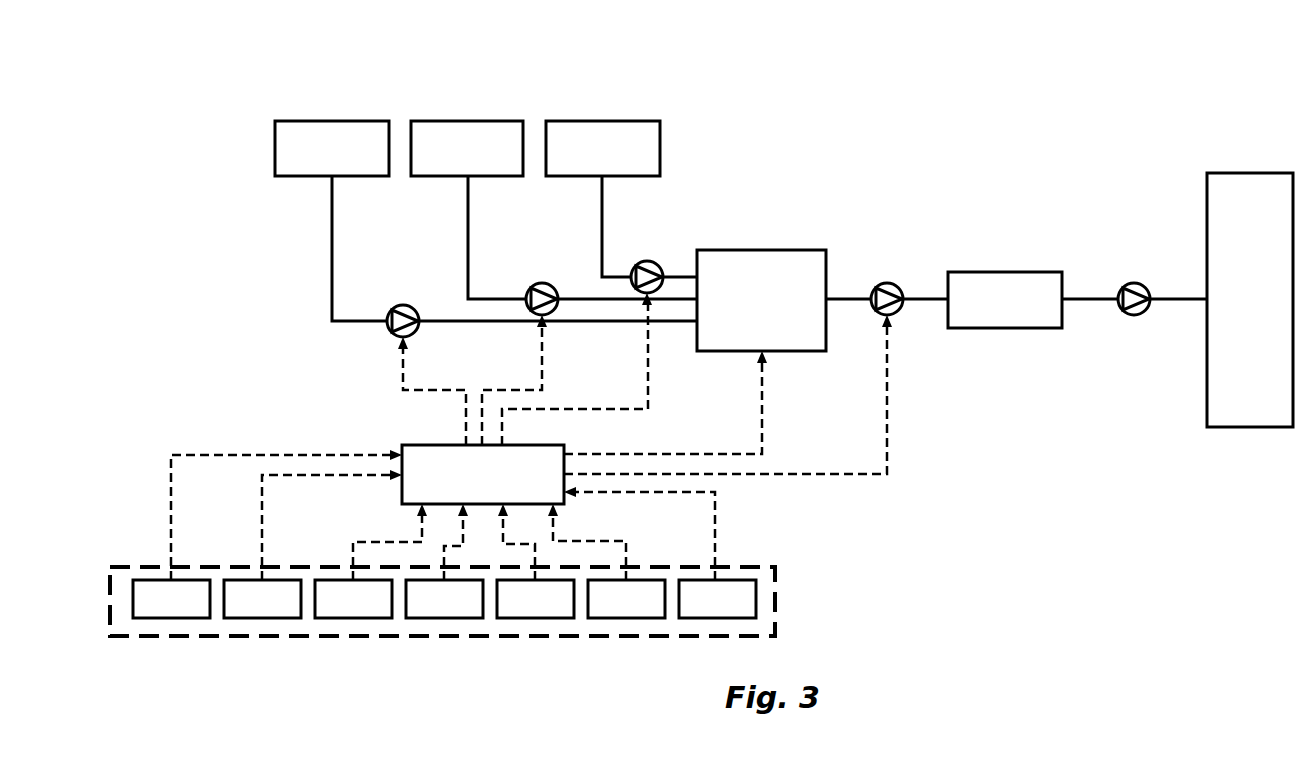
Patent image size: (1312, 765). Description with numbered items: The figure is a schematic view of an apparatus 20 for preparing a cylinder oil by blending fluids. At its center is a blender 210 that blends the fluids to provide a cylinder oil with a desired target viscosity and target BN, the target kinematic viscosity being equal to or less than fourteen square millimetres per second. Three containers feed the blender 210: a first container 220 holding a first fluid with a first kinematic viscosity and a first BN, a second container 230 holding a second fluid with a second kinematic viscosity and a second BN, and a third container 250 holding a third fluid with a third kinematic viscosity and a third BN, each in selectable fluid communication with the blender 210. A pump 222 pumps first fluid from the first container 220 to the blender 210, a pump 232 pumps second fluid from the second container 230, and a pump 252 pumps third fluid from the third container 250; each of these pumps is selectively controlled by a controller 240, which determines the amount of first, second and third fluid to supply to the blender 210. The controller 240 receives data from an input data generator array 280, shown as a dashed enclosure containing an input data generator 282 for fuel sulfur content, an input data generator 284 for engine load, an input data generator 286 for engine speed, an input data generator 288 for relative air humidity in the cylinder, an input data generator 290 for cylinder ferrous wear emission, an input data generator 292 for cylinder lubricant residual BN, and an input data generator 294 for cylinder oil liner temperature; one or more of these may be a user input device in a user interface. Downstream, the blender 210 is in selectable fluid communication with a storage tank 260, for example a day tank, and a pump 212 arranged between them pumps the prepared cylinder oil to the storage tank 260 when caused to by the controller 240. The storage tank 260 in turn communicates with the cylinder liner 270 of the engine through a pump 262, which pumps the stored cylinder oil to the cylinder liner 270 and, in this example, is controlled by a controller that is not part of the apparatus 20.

The apparatus 20 is at (770, 94).
The blender 210 is at (822, 300).
The pump 212 is at (888, 282).
The first container 220 is at (486, 221).
The pump 222 is at (402, 304).
The second container 230 is at (554, 210).
The pump 232 is at (541, 282).
The controller 240 is at (645, 398).
The third container 250 is at (621, 199).
The pump 252 is at (646, 260).
The storage tank 260 is at (1077, 300).
The pump 262 is at (1136, 282).
The cylinder liner 270 is at (1250, 300).
The input data generator array 280 is at (775, 602).
The input data generator 282 is at (267, 534).
The input data generator 284 is at (313, 544).
The input data generator 286 is at (371, 561).
The input data generator 288 is at (444, 561).
The input data generator 290 is at (535, 561).
The input data generator 292 is at (606, 561).
The input data generator 294 is at (660, 552).